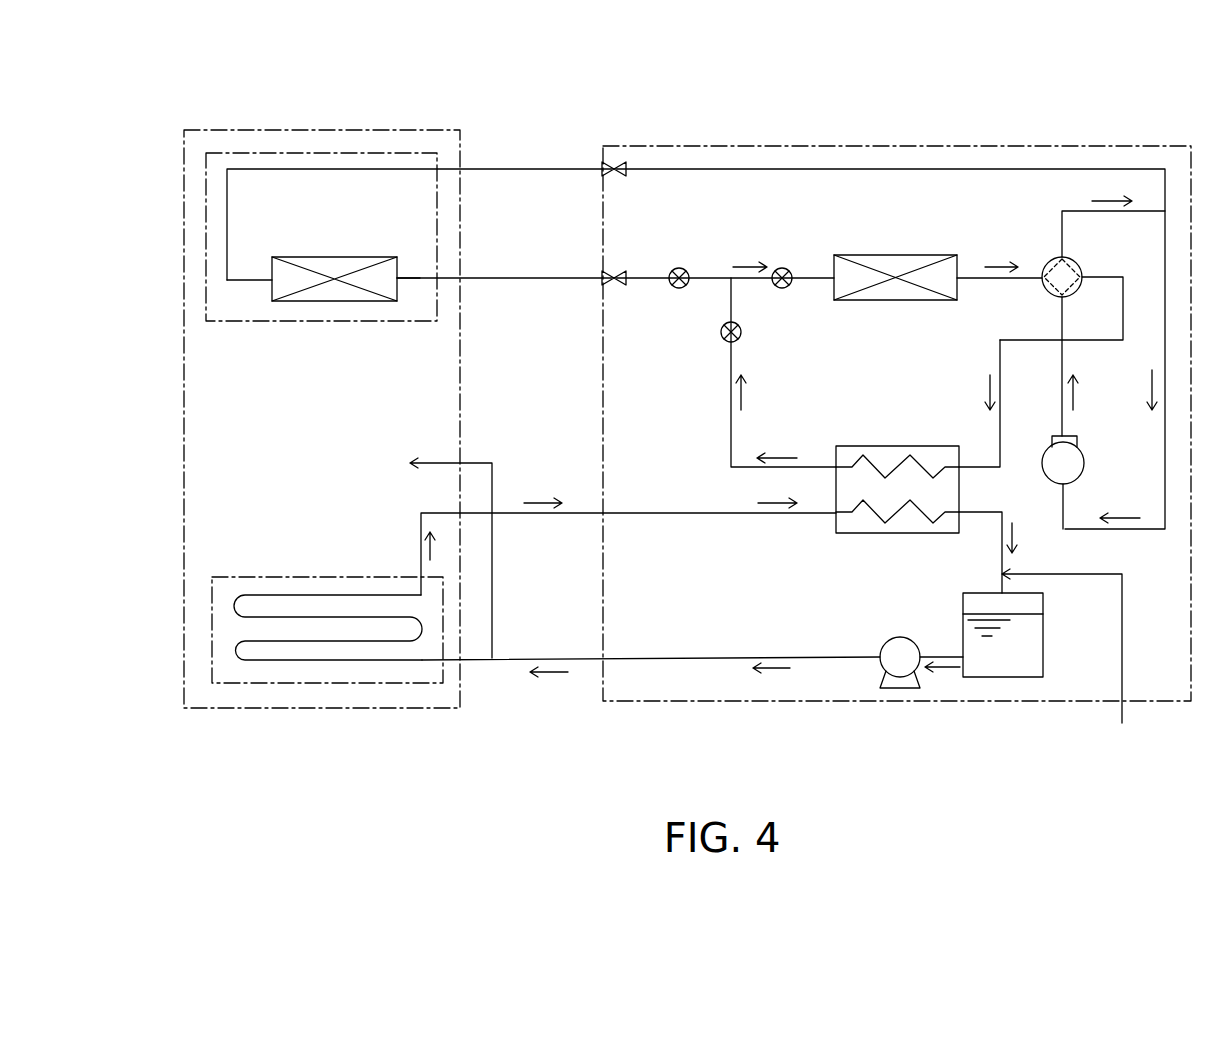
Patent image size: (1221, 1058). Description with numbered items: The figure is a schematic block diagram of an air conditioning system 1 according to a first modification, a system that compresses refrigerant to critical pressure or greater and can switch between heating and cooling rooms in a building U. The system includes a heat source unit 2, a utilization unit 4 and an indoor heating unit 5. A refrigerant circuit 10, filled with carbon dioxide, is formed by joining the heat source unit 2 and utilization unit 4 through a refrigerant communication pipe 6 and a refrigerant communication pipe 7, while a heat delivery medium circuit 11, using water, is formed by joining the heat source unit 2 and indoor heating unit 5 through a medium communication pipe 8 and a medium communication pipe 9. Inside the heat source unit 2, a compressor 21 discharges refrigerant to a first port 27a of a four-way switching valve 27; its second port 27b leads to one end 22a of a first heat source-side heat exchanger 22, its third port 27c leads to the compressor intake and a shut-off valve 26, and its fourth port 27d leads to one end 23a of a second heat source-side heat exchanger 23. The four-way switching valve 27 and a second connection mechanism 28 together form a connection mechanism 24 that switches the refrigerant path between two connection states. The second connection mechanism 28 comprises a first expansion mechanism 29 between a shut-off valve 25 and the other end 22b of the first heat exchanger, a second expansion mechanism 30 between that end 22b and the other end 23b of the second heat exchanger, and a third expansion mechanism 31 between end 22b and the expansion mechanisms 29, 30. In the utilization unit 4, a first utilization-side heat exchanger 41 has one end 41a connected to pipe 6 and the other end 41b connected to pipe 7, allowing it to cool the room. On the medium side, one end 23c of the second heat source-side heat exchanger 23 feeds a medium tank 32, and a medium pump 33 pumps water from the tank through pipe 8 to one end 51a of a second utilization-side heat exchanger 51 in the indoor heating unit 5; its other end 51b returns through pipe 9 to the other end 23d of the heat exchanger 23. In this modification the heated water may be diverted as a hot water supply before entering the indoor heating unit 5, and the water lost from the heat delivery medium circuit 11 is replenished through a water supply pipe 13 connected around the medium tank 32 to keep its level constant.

The air conditioning system 1 is at (692, 376).
The heat source unit 2 is at (1100, 142).
The utilization unit 4 is at (270, 152).
The building U is at (405, 128).
The indoor heating unit 5 is at (365, 683).
The refrigerant communication pipe 6 is at (540, 276).
The refrigerant communication pipe 7 is at (498, 168).
The medium communication pipe 8 is at (524, 657).
The medium communication pipe 9 is at (515, 513).
The refrigerant circuit 10 is at (578, 130).
The heat delivery medium circuit 11 is at (580, 487).
The water supply pipe 13 is at (1125, 600).
The compressor 21 is at (1086, 458).
The first heat source-side heat exchanger 22 is at (912, 252).
The one end of first heat source-side heat exchanger 22a is at (957, 285).
The other end of first heat source-side heat exchanger 22b is at (832, 295).
The second heat source-side heat exchanger 23 is at (893, 445).
The one end of second heat source-side heat exchanger 23a is at (965, 458).
The other end of second heat source-side heat exchanger 23b is at (835, 468).
The one end of second heat source-side heat exchanger 23c is at (962, 511).
The other end of second heat source-side heat exchanger 23d is at (835, 513).
The connection mechanism 24 is at (1044, 225).
The shut-off valve 25 is at (618, 287).
The shut-off valve 26 is at (614, 162).
The four-way switching valve 27 is at (1043, 265).
The first port 27a is at (1066, 300).
The second port 27b is at (1048, 287).
The third port 27c is at (1058, 258).
The fourth port 27d is at (1085, 276).
The second connection mechanism 28 is at (716, 240).
The first expansion mechanism 29 is at (679, 267).
The second expansion mechanism 30 is at (720, 336).
The third expansion mechanism 31 is at (782, 267).
The medium tank 32 is at (1045, 625).
The medium pump 33 is at (888, 638).
The first utilization-side heat exchanger 41 is at (333, 255).
The one end of first utilization-side heat exchanger 41a is at (272, 283).
The other end of first utilization-side heat exchanger 41b is at (397, 283).
The second utilization-side heat exchanger 51 is at (293, 595).
The one end of second utilization-side heat exchanger 51a is at (400, 660).
The other end of second utilization-side heat exchanger 51b is at (420, 595).